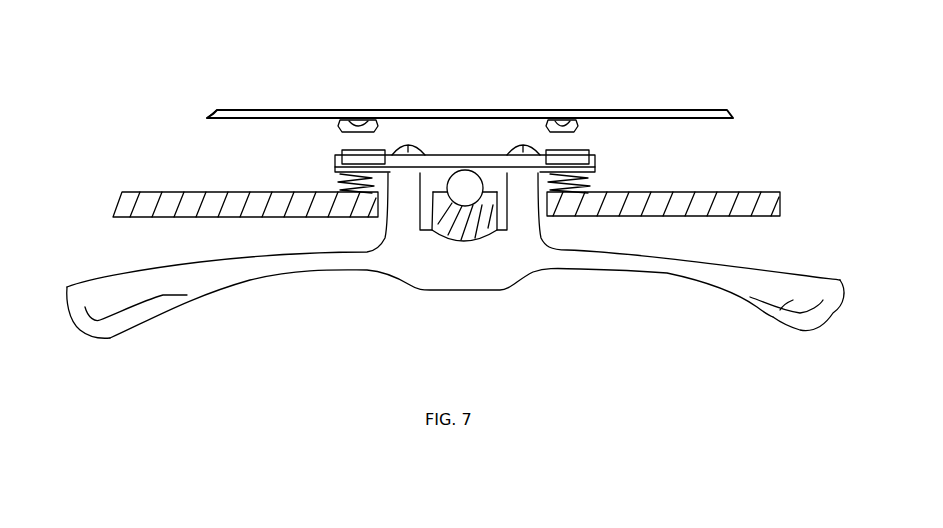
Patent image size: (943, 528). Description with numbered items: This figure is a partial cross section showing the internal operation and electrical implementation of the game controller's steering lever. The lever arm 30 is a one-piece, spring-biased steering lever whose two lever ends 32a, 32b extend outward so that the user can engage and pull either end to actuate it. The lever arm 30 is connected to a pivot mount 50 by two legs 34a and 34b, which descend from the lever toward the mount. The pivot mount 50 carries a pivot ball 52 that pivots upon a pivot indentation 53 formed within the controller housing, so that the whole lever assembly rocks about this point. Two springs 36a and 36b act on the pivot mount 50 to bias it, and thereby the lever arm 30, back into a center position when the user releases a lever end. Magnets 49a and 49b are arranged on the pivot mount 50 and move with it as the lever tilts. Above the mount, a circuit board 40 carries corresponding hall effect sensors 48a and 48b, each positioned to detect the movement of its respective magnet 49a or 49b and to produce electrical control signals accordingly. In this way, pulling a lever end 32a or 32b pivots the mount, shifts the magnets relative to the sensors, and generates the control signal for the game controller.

The steering lever 30 is at (463, 287).
The lever end 32a is at (160, 295).
The lever end 32b is at (777, 317).
The leg 34a is at (403, 200).
The leg 34b is at (523, 213).
The spring 36a is at (345, 192).
The spring 36b is at (595, 186).
The circuit board 40 is at (650, 110).
The hall effect sensor 48a is at (360, 118).
The hall effect sensor 48b is at (562, 118).
The magnet 49a is at (343, 172).
The magnet 49b is at (577, 150).
The pivot mount 50 is at (470, 155).
The pivot ball 52 is at (473, 200).
The pivot indentation 53 is at (443, 200).